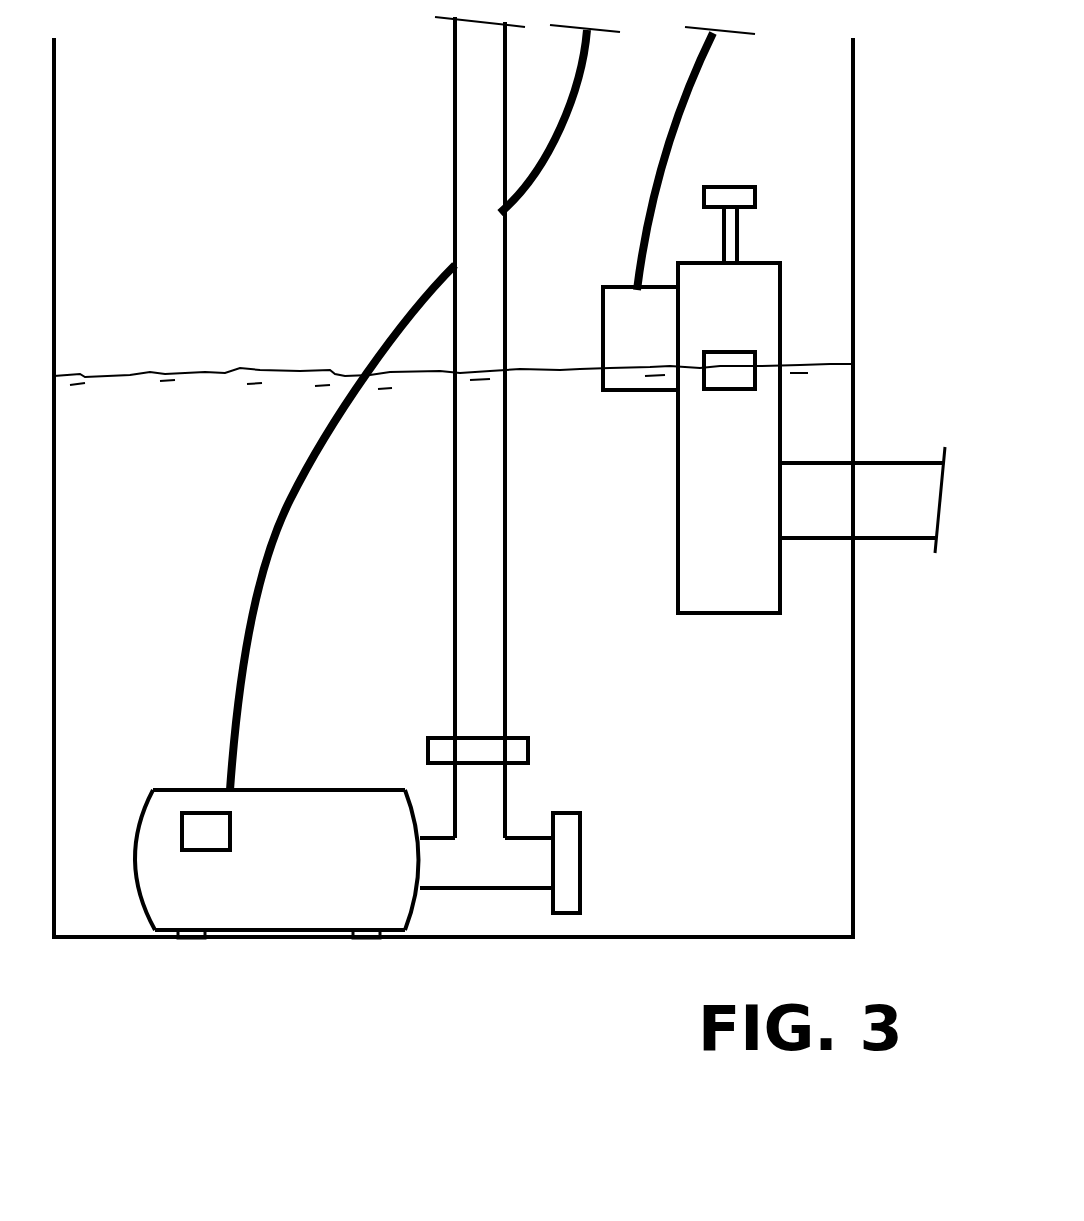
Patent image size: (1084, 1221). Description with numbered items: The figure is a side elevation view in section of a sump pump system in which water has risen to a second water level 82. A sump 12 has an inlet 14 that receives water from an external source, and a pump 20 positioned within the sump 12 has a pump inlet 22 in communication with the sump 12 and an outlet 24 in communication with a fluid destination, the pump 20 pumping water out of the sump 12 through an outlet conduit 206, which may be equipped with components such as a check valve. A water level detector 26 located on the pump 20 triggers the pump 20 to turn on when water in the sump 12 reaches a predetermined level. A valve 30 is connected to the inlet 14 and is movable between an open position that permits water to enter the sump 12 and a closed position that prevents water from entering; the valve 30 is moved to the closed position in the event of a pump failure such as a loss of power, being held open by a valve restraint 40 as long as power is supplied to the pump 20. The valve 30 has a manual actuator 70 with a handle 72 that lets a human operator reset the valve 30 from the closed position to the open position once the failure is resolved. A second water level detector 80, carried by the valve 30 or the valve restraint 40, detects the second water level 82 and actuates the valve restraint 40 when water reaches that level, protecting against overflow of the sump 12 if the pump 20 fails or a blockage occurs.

The sump 12 is at (468, 940).
The inlet 14 is at (918, 532).
The pump 20 is at (255, 893).
The pump inlet 22 is at (568, 890).
The outlet 24 is at (458, 757).
The water level detector 26 is at (195, 828).
The valve 30 is at (722, 590).
The valve restraint 40 is at (621, 390).
The manual actuator 70 is at (737, 245).
The handle 72 is at (748, 191).
The second water level detector 80 is at (737, 380).
The second water level 82 is at (855, 364).
The outlet conduit 206 is at (460, 148).